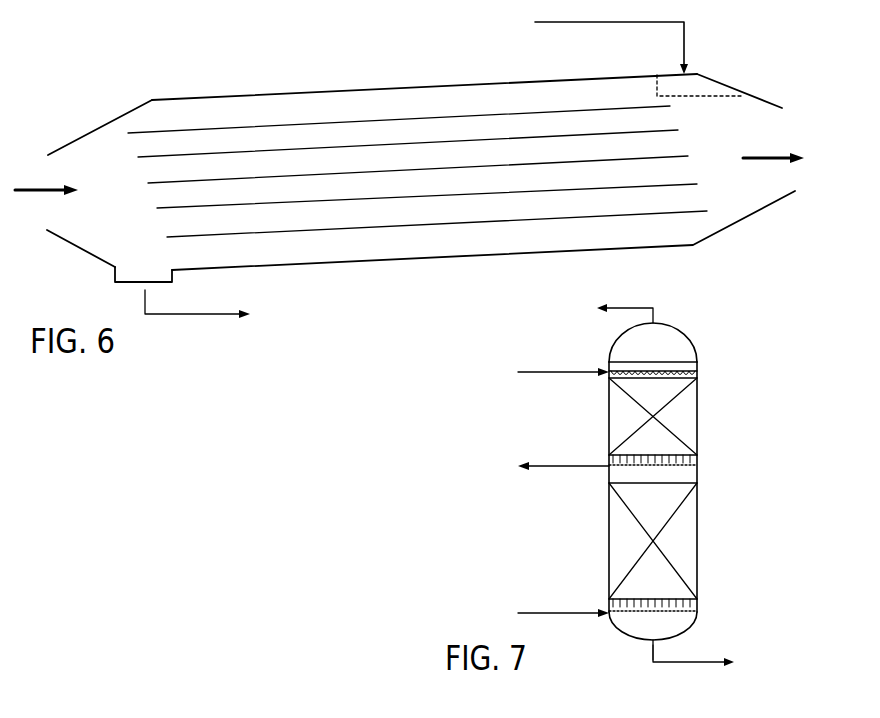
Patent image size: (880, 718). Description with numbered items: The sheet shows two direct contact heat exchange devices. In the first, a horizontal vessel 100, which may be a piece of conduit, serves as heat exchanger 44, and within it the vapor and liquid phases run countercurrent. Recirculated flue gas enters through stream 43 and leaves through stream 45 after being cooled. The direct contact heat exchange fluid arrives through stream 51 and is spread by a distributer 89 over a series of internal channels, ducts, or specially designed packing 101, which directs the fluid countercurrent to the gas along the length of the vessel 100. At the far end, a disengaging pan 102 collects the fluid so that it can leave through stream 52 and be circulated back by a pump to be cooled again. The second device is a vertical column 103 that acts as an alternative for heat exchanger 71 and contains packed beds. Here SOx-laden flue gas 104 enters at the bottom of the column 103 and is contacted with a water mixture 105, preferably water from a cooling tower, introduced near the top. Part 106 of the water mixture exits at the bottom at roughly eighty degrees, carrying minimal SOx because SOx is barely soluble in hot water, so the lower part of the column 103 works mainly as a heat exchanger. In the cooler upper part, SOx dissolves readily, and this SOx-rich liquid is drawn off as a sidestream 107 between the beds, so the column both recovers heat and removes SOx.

In FIG. 6, the horizontal vessel 100 is at (272, 93).
In FIG. 6, the heat exchanger 44 is at (365, 90).
In FIG. 6, the packing 101 is at (183, 209).
In FIG. 6, the stream 43 is at (40, 192).
In FIG. 6, the stream 45 is at (763, 156).
In FIG. 6, the stream 51 is at (591, 23).
In FIG. 6, the distributer 89 is at (706, 97).
In FIG. 6, the disengaging pan 102 is at (157, 271).
In FIG. 6, the stream 52 is at (229, 312).
In FIG. 7, the column 103 is at (697, 413).
In FIG. 7, the heat exchanger 71 is at (700, 418).
In FIG. 7, the water mixture 105 is at (550, 374).
In FIG. 7, the stream 107 is at (558, 468).
In FIG. 7, the flue gas 104 is at (548, 615).
In FIG. 7, the part of the water mixture 106 is at (697, 661).